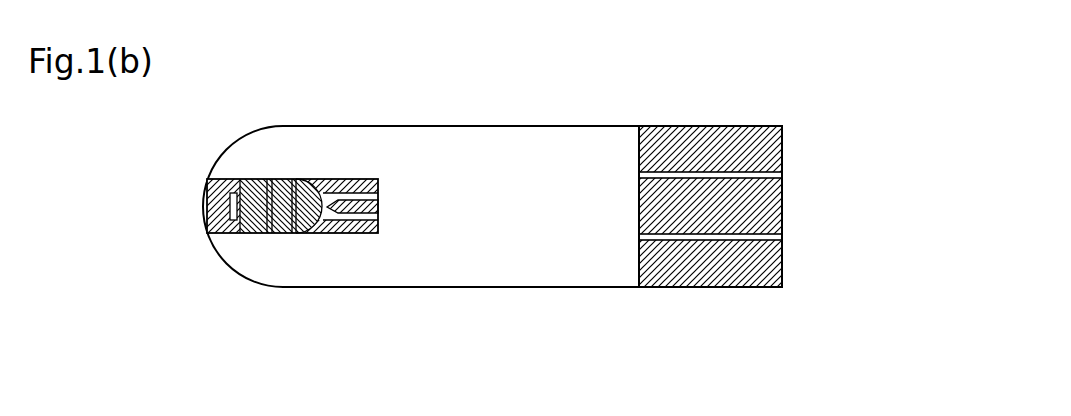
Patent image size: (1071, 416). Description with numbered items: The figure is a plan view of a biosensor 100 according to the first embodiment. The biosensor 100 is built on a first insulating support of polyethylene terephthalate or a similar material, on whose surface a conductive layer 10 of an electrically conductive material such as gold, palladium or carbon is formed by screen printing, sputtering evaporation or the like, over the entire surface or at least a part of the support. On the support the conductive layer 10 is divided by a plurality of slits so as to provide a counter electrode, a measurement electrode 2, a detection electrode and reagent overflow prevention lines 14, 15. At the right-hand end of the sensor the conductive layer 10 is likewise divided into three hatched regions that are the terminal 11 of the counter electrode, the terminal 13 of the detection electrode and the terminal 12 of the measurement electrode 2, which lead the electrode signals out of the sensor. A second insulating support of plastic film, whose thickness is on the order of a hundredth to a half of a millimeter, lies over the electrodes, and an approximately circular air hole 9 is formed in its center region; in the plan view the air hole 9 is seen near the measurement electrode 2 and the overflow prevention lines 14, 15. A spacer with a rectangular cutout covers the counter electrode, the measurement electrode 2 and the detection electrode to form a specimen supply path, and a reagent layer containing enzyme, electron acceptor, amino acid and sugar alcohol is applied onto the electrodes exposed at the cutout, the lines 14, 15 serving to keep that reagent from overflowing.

The biosensor 100 is at (842, 108).
The conductive layer 10 is at (747, 171).
The terminal of the counter electrode 11 is at (767, 152).
The terminal of the detection electrode 13 is at (767, 208).
The terminal of the measurement electrode 12 is at (767, 256).
The measurement electrode 2 is at (281, 214).
The reagent overflow prevention line 14 is at (230, 204).
The reagent overflow prevention line 15 is at (325, 227).
The air hole 9 is at (378, 207).